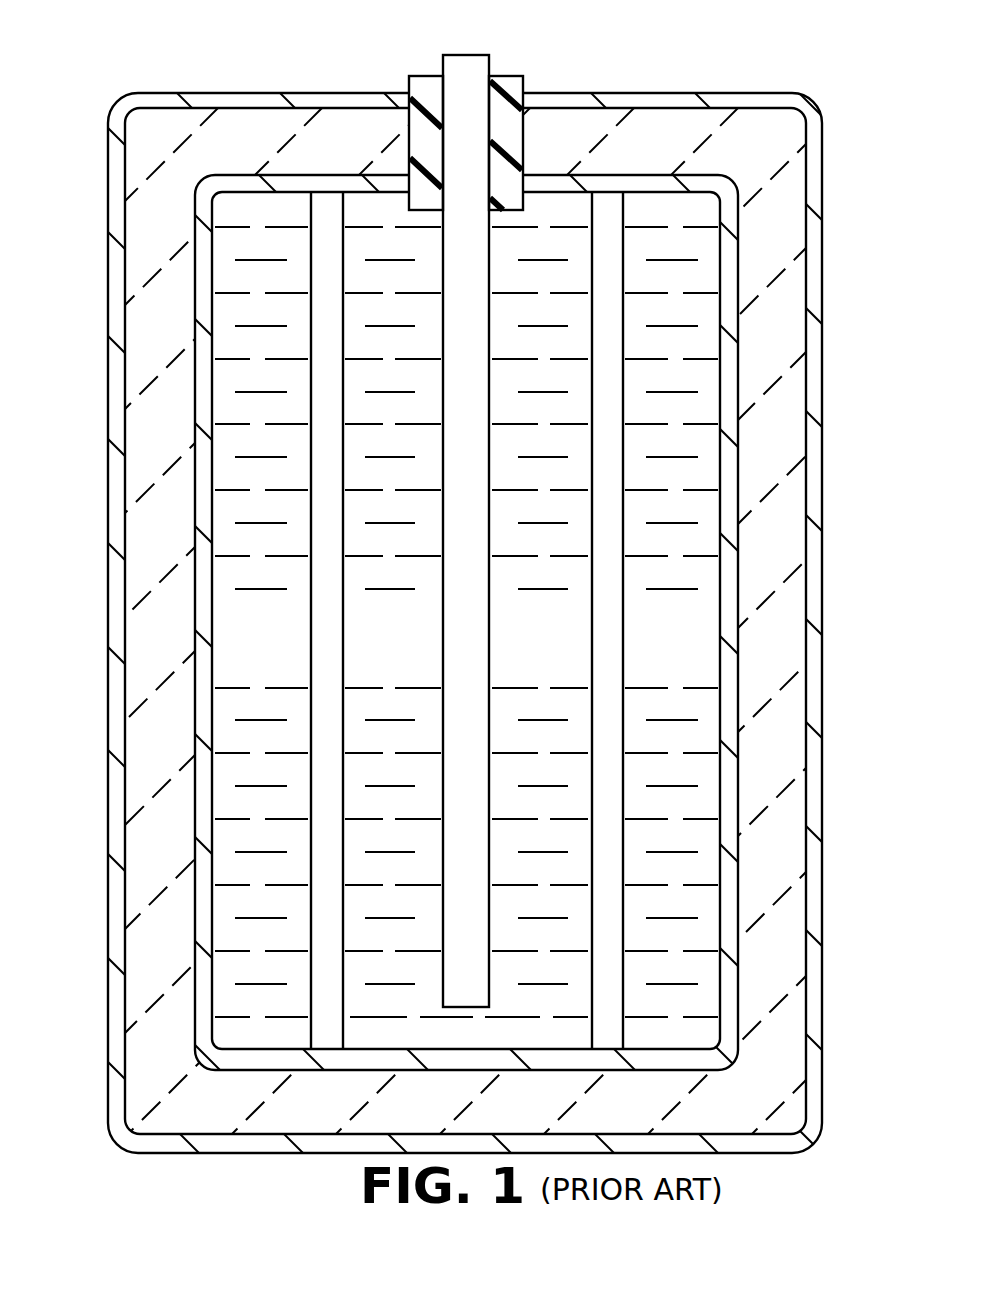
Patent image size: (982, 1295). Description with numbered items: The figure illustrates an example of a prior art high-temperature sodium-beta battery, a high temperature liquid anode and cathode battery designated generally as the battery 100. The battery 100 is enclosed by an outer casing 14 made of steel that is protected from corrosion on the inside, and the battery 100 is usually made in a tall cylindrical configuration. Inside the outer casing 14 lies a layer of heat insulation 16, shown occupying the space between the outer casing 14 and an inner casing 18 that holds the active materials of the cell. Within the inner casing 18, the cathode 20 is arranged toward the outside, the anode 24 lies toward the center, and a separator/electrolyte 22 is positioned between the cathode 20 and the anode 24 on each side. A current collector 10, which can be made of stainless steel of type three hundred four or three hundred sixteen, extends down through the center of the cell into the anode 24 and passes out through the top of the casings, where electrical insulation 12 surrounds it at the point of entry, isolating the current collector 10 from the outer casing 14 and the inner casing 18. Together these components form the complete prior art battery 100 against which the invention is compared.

The battery 100 is at (692, 52).
The current collector 10 is at (490, 62).
The electrical insulation 12 is at (423, 74).
The outer casing 14 is at (221, 93).
The heat insulation 16 is at (173, 340).
The inner casing 18 is at (720, 176).
The cathode 20 is at (287, 643).
The separator/electrolyte 22 is at (327, 208).
The anode 24 is at (412, 643).